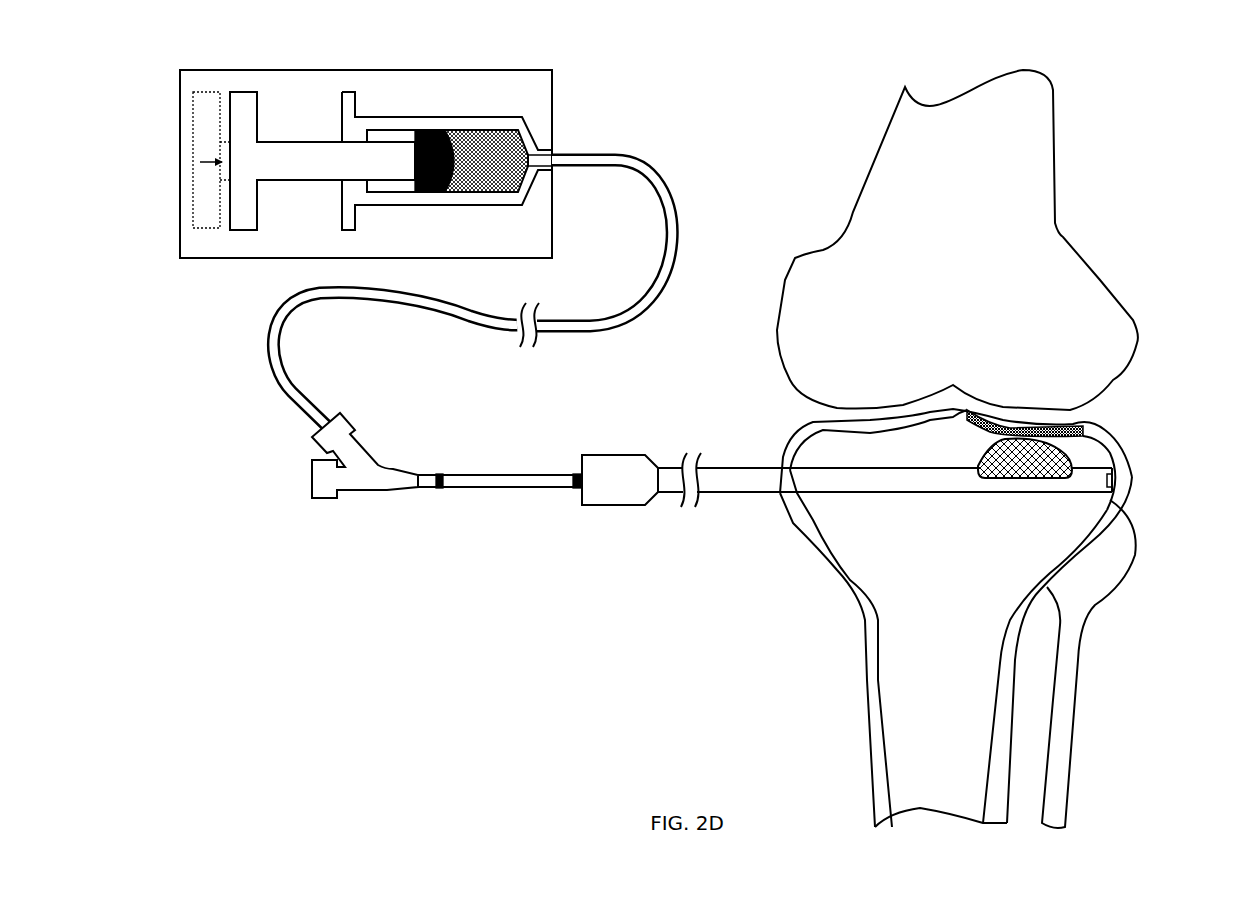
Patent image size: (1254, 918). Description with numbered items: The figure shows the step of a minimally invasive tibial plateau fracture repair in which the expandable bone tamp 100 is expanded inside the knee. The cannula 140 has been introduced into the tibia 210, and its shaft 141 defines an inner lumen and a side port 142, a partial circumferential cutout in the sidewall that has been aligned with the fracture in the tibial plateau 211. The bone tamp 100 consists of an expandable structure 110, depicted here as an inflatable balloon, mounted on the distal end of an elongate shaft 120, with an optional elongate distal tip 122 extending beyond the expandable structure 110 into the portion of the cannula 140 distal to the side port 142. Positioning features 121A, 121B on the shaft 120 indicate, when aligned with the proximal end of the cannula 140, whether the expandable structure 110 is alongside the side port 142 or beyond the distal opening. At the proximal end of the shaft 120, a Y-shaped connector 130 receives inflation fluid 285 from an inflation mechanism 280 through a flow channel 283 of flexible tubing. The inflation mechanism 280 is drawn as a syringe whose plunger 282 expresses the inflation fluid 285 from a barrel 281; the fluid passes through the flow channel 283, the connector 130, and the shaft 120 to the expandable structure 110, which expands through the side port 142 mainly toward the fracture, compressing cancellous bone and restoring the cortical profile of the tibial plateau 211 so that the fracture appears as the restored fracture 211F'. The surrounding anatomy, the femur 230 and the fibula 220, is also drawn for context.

The expandable bone tamp 100 is at (460, 418).
The expandable structure 110 is at (1070, 462).
The elongate shaft 120 is at (527, 488).
The positioning feature 121A is at (578, 490).
The positioning feature 121B is at (440, 472).
The elongate distal tip 122 is at (1113, 497).
The connector 130 is at (365, 492).
The cannula 140 is at (618, 427).
The shaft 141 is at (855, 493).
The side port 142 is at (1077, 455).
The tibia 210 is at (928, 613).
The tibial plateau 211 is at (883, 420).
The restored fracture 211F' is at (1098, 359).
The fibula 220 is at (1066, 583).
The femur 230 is at (941, 240).
The inflation mechanism 280 is at (253, 263).
The barrel 281 is at (463, 117).
The plunger 282 is at (310, 181).
The flow channel 283 is at (677, 217).
The inflation fluid 285 is at (507, 157).